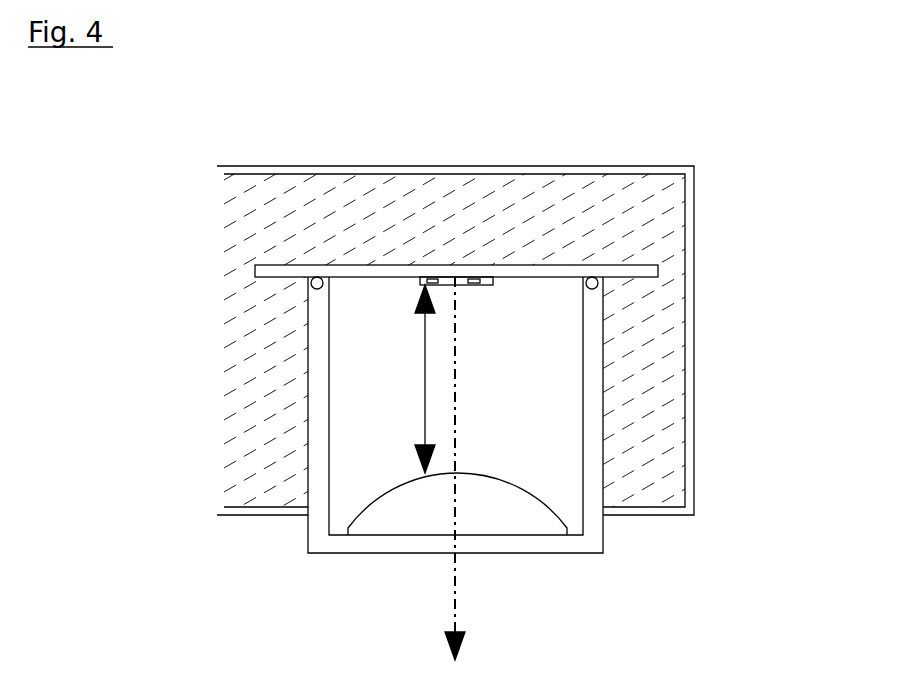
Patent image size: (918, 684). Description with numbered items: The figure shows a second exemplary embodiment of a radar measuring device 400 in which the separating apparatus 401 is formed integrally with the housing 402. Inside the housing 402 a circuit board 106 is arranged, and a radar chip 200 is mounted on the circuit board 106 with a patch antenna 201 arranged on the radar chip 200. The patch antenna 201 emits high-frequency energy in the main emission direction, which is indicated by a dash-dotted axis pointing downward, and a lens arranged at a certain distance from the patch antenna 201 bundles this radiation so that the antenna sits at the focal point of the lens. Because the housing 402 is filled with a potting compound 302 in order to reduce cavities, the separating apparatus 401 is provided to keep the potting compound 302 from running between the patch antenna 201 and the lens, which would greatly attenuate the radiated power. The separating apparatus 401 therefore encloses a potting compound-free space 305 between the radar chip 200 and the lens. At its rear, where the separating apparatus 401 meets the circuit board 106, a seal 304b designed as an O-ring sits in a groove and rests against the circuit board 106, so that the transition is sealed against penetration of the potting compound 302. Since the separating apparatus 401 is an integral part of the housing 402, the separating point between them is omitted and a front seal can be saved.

The sensor arrangement 400 is at (449, 342).
The housing 402 is at (688, 440).
The potting compound 302 is at (258, 477).
The circuit board 106 is at (388, 276).
The separating apparatus 401 is at (590, 488).
The seal 304b is at (598, 283).
The potting compound-free space 305 is at (497, 432).
The radar chip 200 is at (448, 278).
The patch antenna 201 is at (477, 288).